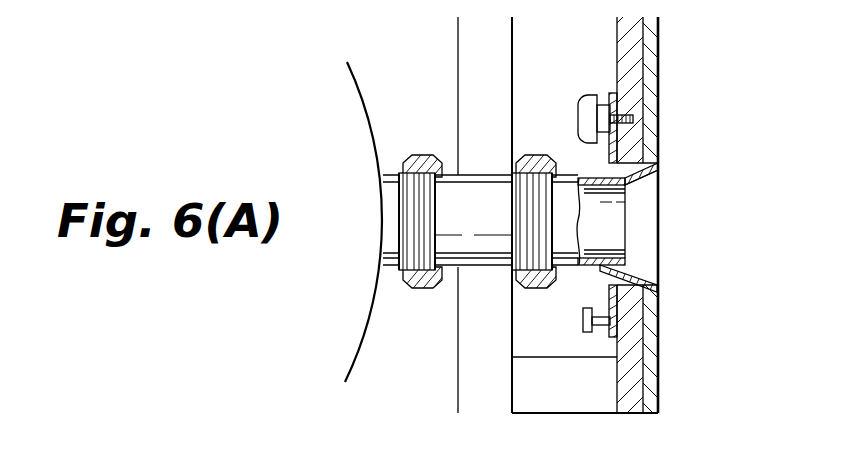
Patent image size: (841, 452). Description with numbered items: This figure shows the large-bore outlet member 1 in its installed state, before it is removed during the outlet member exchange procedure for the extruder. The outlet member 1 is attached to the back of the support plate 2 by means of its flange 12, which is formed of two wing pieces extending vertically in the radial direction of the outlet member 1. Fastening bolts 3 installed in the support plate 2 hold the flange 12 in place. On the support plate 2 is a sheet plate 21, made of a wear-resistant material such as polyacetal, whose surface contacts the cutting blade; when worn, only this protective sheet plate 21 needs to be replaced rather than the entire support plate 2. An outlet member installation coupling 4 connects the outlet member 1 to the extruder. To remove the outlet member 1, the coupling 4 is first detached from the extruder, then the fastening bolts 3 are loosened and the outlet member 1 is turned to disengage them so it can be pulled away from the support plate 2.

The outlet member 1 is at (653, 273).
The support plate 2 is at (627, 342).
The sheet plate 21 is at (650, 365).
The fastening bolt 3 is at (581, 108).
The outlet member installation coupling 4 is at (576, 181).
The flange 12 is at (617, 93).